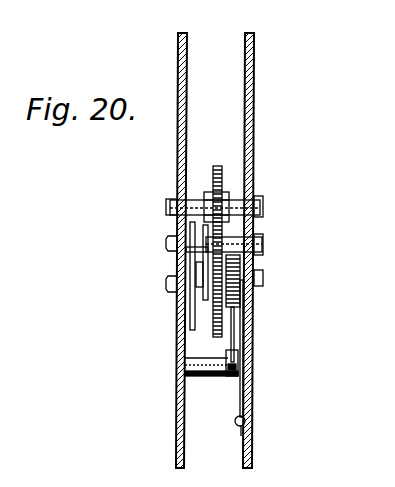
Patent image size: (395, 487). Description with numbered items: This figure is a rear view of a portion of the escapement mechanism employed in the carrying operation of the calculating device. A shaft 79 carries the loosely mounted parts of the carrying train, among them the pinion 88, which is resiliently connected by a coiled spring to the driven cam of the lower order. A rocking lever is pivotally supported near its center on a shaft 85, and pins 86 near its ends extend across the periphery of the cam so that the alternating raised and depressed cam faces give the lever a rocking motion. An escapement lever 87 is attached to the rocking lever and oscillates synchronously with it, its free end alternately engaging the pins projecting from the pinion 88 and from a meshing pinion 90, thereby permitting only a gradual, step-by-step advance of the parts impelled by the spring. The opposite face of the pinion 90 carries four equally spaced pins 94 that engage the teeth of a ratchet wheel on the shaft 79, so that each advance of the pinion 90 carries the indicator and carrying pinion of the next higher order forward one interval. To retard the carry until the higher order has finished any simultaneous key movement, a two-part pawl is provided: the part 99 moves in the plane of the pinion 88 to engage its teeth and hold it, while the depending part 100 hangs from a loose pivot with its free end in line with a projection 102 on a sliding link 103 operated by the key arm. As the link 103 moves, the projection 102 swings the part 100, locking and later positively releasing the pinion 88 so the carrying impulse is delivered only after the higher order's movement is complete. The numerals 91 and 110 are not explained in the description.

The shaft 79 is at (263, 279).
The shaft 85 is at (262, 244).
The pins 86 is at (178, 237).
The escapement lever 87 is at (186, 250).
The pinion 88 is at (192, 323).
The pinion 90 is at (212, 176).
The shaft 91 is at (262, 201).
The pins 94 is at (228, 212).
The pawl part 99 is at (243, 337).
The pawl part 100 is at (247, 403).
The projection 102 is at (236, 422).
The sliding link 103 is at (236, 425).
The plate 110 is at (219, 377).